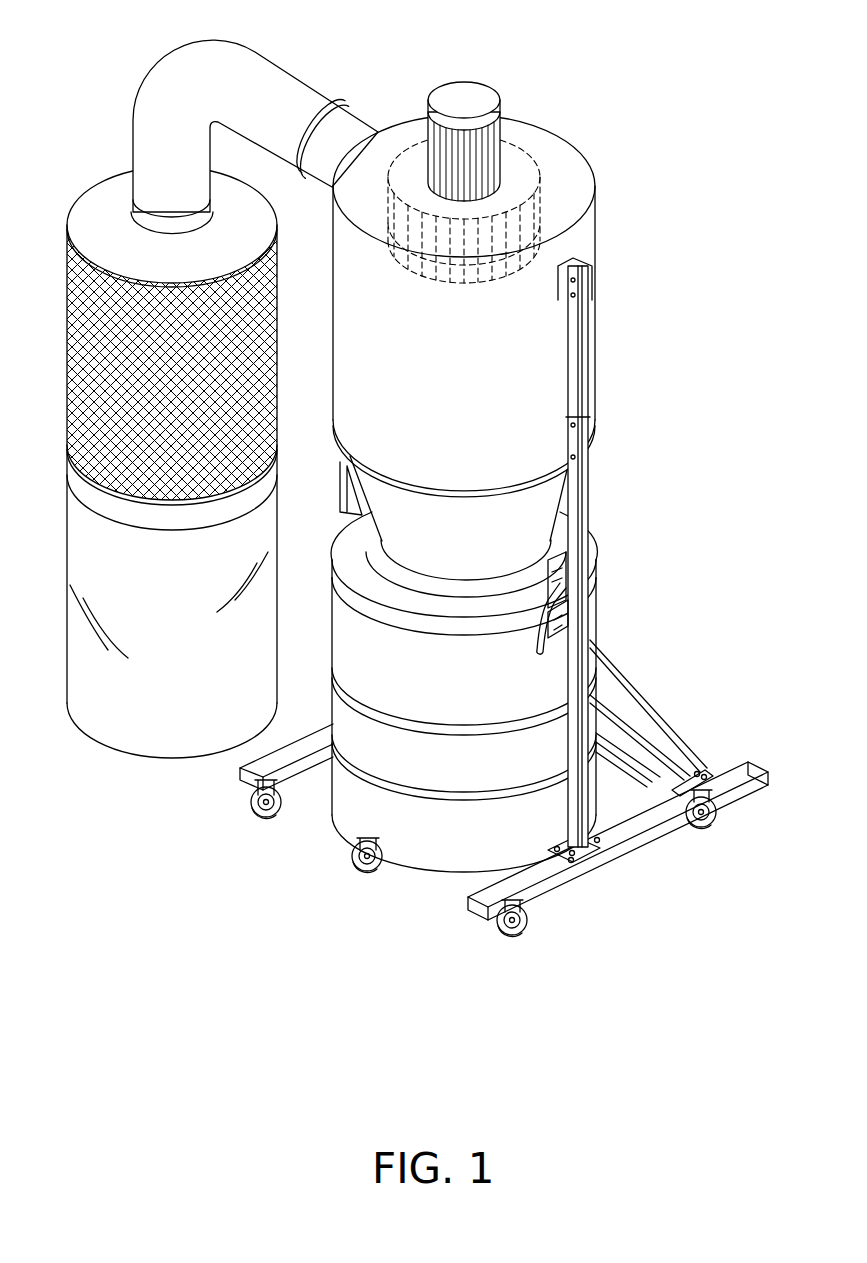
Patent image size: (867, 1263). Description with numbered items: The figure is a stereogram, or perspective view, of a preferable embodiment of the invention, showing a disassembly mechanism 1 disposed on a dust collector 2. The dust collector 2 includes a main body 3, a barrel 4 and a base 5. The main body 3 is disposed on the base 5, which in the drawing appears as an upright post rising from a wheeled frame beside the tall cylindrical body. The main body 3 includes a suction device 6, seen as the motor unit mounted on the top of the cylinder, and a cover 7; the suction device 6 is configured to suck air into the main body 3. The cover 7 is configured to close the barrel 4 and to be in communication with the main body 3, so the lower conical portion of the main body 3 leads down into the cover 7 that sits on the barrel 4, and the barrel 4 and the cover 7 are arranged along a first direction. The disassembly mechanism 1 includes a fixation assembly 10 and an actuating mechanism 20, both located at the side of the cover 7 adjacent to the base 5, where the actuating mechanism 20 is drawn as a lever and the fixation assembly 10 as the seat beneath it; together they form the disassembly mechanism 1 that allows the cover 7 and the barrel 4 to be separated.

The disassembly mechanism 1 is at (634, 600).
The dust collector 2 is at (680, 520).
The main body 3 is at (547, 488).
The barrel 4 is at (538, 687).
The base 5 is at (583, 505).
The suction device 6 is at (485, 155).
The cover 7 is at (507, 613).
The fixation assembly 10 is at (562, 621).
The actuating mechanism 20 is at (568, 603).